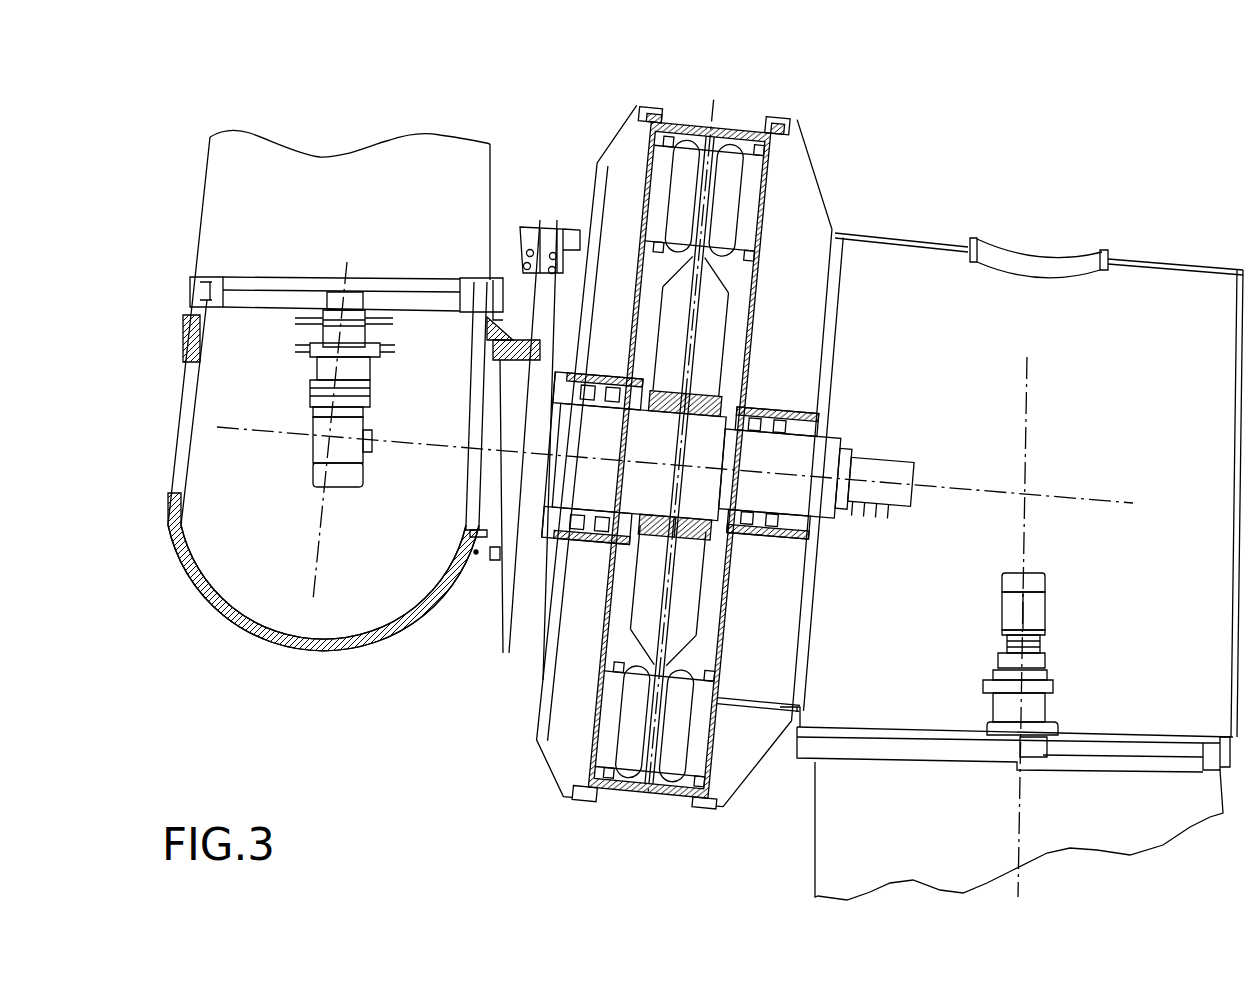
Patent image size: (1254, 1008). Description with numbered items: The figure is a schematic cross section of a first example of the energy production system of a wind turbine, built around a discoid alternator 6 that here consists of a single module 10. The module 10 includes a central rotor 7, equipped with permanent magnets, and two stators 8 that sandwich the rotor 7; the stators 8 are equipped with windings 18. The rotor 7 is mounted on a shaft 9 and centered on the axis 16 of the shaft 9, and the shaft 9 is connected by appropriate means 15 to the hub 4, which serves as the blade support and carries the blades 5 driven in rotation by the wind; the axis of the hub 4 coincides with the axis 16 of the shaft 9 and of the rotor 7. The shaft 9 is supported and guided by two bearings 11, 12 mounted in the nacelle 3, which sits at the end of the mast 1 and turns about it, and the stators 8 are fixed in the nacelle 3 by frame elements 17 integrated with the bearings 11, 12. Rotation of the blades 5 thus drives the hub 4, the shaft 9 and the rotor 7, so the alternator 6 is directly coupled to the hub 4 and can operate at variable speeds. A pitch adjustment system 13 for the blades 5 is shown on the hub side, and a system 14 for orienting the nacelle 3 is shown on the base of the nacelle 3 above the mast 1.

The mast 1 is at (822, 843).
The nacelle 3 is at (1168, 268).
The hub 4 is at (247, 580).
The blades 5 is at (413, 162).
The discoid alternator 6 is at (632, 825).
The central rotor 7 is at (702, 130).
The stators 8 is at (752, 200).
The shaft 9 is at (556, 510).
The module 10 is at (789, 90).
The bearing 11 is at (770, 535).
The bearing 12 is at (582, 543).
The pitch adjustment system 13 is at (363, 459).
The system for orienting the nacelle 14 is at (1043, 664).
The connecting means 15 is at (492, 348).
The axis 16 is at (948, 484).
The frame elements 17 is at (757, 296).
The windings 18 is at (688, 135).